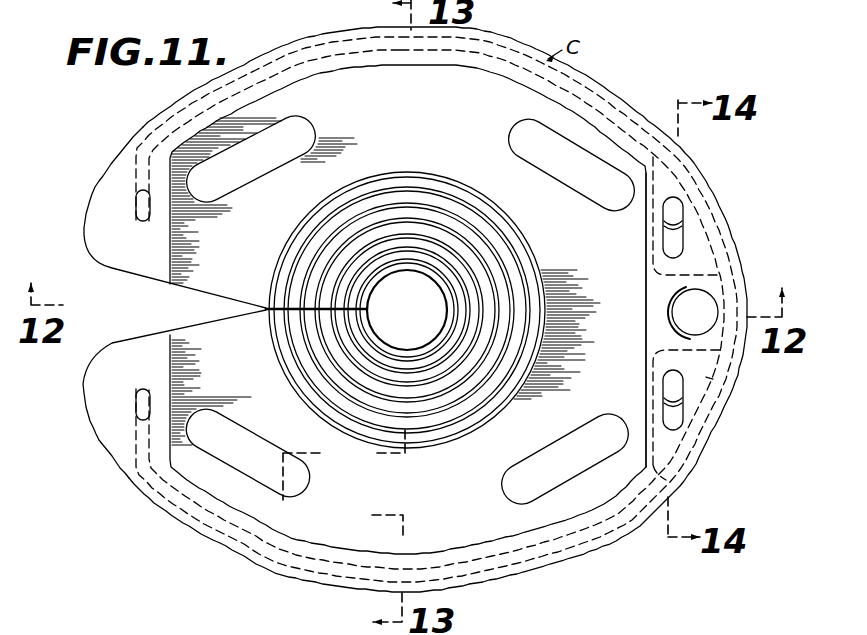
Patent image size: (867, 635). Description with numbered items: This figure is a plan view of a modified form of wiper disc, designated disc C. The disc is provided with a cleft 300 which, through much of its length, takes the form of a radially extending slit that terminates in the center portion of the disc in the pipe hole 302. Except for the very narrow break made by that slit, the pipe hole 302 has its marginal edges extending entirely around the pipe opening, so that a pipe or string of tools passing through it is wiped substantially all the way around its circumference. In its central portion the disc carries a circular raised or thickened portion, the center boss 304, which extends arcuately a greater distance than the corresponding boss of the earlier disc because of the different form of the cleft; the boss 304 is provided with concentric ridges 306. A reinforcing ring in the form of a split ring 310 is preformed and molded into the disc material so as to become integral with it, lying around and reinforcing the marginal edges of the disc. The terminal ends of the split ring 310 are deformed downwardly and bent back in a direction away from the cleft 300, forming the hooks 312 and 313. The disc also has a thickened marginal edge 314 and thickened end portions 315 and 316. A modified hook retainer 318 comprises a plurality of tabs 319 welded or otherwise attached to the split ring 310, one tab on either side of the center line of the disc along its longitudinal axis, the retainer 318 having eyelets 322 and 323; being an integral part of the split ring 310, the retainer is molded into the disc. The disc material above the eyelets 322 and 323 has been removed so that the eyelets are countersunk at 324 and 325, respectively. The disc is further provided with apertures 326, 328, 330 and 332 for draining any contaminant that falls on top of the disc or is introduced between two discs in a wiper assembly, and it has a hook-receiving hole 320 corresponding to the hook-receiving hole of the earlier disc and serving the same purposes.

The cleft 300 is at (217, 297).
The pipe hole 302 is at (443, 292).
The center boss 304 is at (500, 255).
The concentric ridges 306 is at (447, 221).
The split ring 310 is at (283, 562).
The hook 312 is at (138, 408).
The hook 313 is at (136, 210).
The thickened marginal edge 314 is at (200, 498).
The thickened end portion 315 is at (651, 353).
The thickened end portion 316 is at (120, 365).
The hook retainer 318 is at (705, 376).
The tab 319 is at (653, 397).
The hook-receiving hole 320 is at (702, 306).
The eyelet 322 is at (678, 241).
The eyelet 323 is at (682, 394).
The countersink 324 is at (684, 210).
The countersink 325 is at (676, 431).
The aperture 326 is at (313, 127).
The aperture 328 is at (513, 136).
The aperture 330 is at (506, 490).
The aperture 332 is at (226, 431).